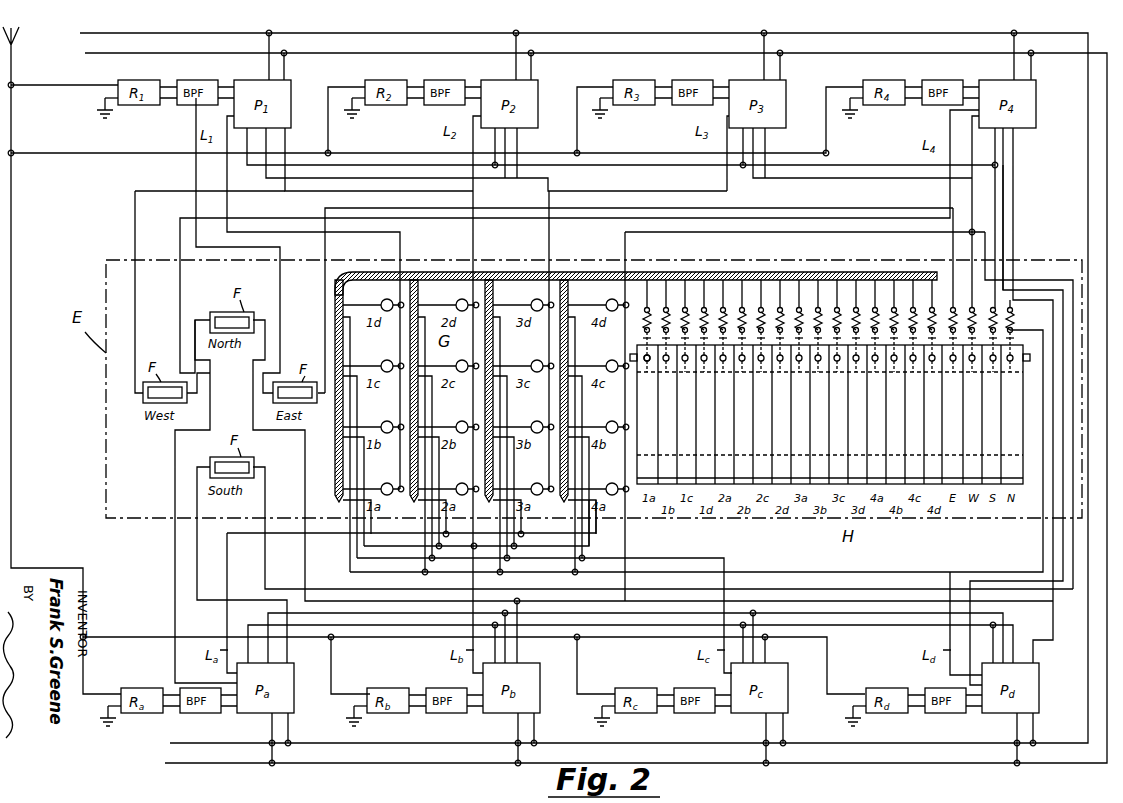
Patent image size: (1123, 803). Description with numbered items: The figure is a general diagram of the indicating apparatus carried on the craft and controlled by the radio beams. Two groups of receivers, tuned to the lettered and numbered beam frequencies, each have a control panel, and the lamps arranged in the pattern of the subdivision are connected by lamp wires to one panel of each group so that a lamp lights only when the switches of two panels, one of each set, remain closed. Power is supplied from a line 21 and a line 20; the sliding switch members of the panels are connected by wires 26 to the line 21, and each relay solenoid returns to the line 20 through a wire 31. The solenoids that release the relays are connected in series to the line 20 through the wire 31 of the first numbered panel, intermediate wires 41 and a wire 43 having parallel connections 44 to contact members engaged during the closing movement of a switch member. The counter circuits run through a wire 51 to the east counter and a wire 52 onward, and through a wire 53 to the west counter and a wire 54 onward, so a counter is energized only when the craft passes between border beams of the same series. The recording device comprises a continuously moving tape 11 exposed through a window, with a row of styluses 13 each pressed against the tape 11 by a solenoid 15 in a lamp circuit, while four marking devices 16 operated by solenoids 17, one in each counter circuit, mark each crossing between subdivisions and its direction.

The tape 11 is at (1024, 429).
The styluses 13 is at (646, 356).
The solenoid 15 is at (644, 310).
The marking devices 16 is at (1015, 362).
The solenoids 17 is at (1018, 312).
The line 20 is at (85, 53).
The line 21 is at (80, 33).
The wires 26 is at (269, 43).
The wire 31 is at (286, 69).
The intermediate wires 41 is at (342, 179).
The wire 43 is at (613, 156).
The parallel connections 44 is at (985, 164).
The wire 51 is at (194, 140).
The wire 52 is at (406, 210).
The wire 53 is at (948, 132).
The wire 54 is at (287, 142).